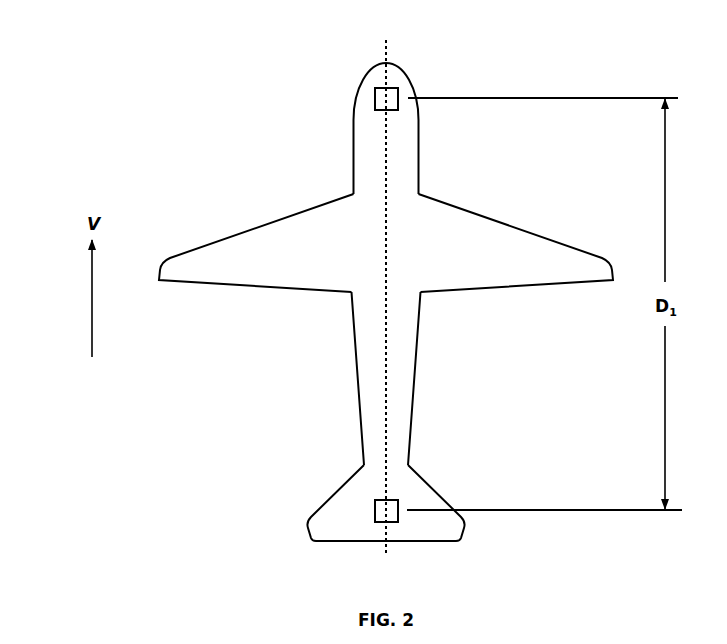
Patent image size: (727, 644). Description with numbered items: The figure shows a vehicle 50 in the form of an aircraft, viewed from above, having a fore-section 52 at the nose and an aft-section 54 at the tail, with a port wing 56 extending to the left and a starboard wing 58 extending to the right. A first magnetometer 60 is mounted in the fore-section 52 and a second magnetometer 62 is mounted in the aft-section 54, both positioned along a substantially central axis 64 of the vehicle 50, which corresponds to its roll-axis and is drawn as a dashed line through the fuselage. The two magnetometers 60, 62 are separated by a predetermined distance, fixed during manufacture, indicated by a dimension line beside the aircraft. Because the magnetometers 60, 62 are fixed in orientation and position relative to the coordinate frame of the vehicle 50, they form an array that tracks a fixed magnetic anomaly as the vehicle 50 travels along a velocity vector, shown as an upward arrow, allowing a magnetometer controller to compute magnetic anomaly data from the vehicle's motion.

The vehicle 50 is at (89, 47).
The fore-section 52 is at (419, 72).
The aft-section 54 is at (297, 508).
The port wing 56 is at (194, 229).
The starboard wing 58 is at (579, 237).
The first magnetometer 60 is at (375, 96).
The second magnetometer 62 is at (375, 507).
The central axis 64 is at (380, 241).